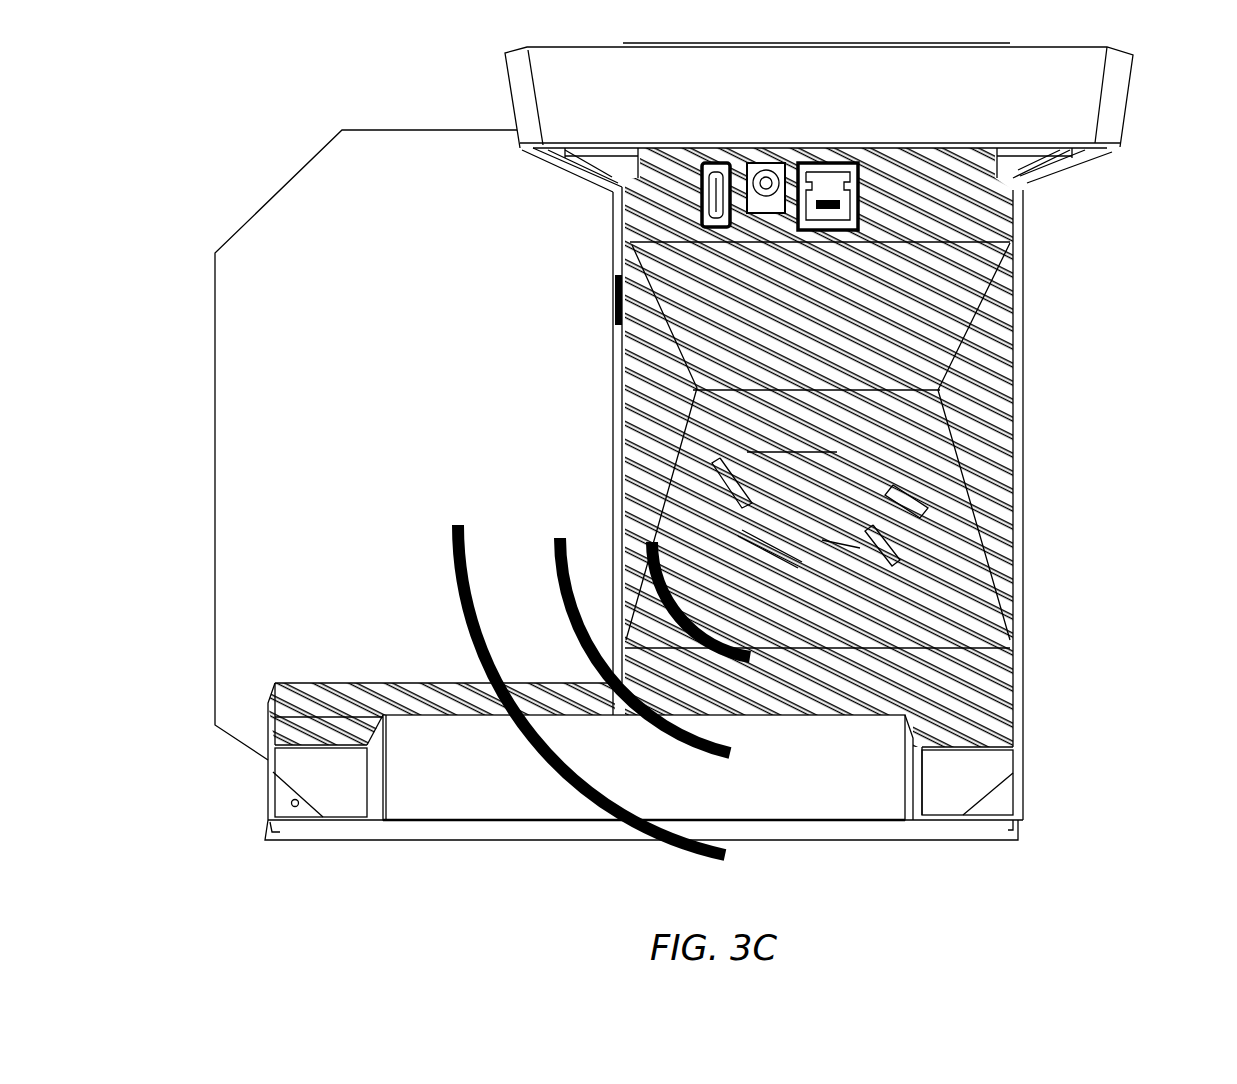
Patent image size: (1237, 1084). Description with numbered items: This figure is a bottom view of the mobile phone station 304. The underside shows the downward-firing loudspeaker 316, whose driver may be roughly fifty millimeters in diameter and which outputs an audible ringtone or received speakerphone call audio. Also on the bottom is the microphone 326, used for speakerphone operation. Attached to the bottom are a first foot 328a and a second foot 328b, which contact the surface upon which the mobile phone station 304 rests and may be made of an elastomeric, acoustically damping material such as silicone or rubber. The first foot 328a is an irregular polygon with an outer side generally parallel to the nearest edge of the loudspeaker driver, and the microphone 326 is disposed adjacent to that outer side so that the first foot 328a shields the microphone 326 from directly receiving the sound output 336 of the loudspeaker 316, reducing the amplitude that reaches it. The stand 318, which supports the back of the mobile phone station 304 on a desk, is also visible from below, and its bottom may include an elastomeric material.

The mobile phone station 304 is at (704, 441).
The loudspeaker 316 is at (975, 512).
The stand 318 is at (518, 74).
The microphone 326 is at (290, 803).
The first foot 328a is at (320, 781).
The second foot 328b is at (967, 781).
The sound output 336 is at (458, 516).